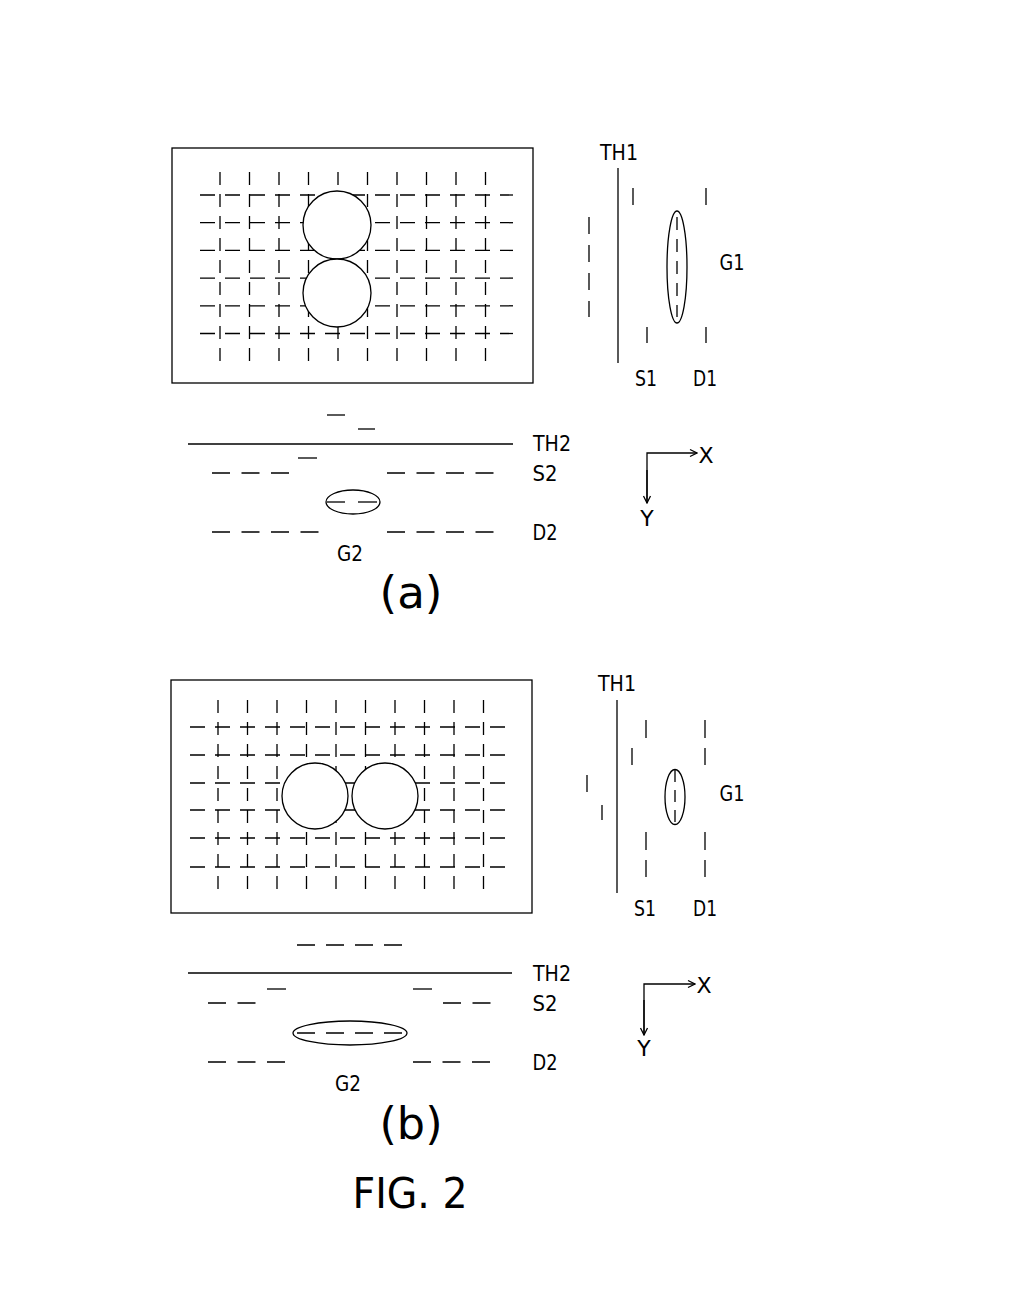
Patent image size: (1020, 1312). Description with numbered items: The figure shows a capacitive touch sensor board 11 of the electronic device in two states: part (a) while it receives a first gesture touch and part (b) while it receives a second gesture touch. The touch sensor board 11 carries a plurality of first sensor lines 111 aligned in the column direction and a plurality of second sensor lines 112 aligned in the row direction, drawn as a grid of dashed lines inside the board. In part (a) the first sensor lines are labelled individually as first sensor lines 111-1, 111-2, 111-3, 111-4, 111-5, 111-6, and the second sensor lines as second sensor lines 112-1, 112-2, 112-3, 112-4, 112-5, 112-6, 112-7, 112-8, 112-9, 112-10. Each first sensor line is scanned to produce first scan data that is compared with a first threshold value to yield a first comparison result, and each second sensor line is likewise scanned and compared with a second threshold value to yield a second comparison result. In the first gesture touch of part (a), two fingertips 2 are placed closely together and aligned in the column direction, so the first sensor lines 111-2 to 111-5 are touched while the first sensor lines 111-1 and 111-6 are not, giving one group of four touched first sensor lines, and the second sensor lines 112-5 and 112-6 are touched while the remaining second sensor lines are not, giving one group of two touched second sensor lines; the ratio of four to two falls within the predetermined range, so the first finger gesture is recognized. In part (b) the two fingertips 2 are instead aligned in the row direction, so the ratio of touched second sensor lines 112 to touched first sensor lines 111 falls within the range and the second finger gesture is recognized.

The touch sensor board 11 is at (515, 148).
The first sensor lines 111 is at (72, 182).
The first sensor line 111-1 is at (199, 330).
The first sensor line 111-2 is at (199, 303).
The first sensor line 111-3 is at (199, 275).
The first sensor line 111-4 is at (199, 247).
The first sensor line 111-5 is at (199, 220).
The first sensor line 111-6 is at (199, 192).
The second sensor lines 112 is at (457, 45).
The second sensor line 112-1 is at (218, 177).
The second sensor line 112-2 is at (248, 177).
The second sensor line 112-3 is at (277, 177).
The second sensor line 112-4 is at (306, 177).
The second sensor line 112-5 is at (336, 177).
The second sensor line 112-6 is at (366, 177).
The second sensor line 112-7 is at (395, 177).
The second sensor line 112-8 is at (424, 177).
The second sensor line 112-9 is at (454, 177).
The second sensor line 112-10 is at (484, 177).
The fingertips 2 is at (328, 243).